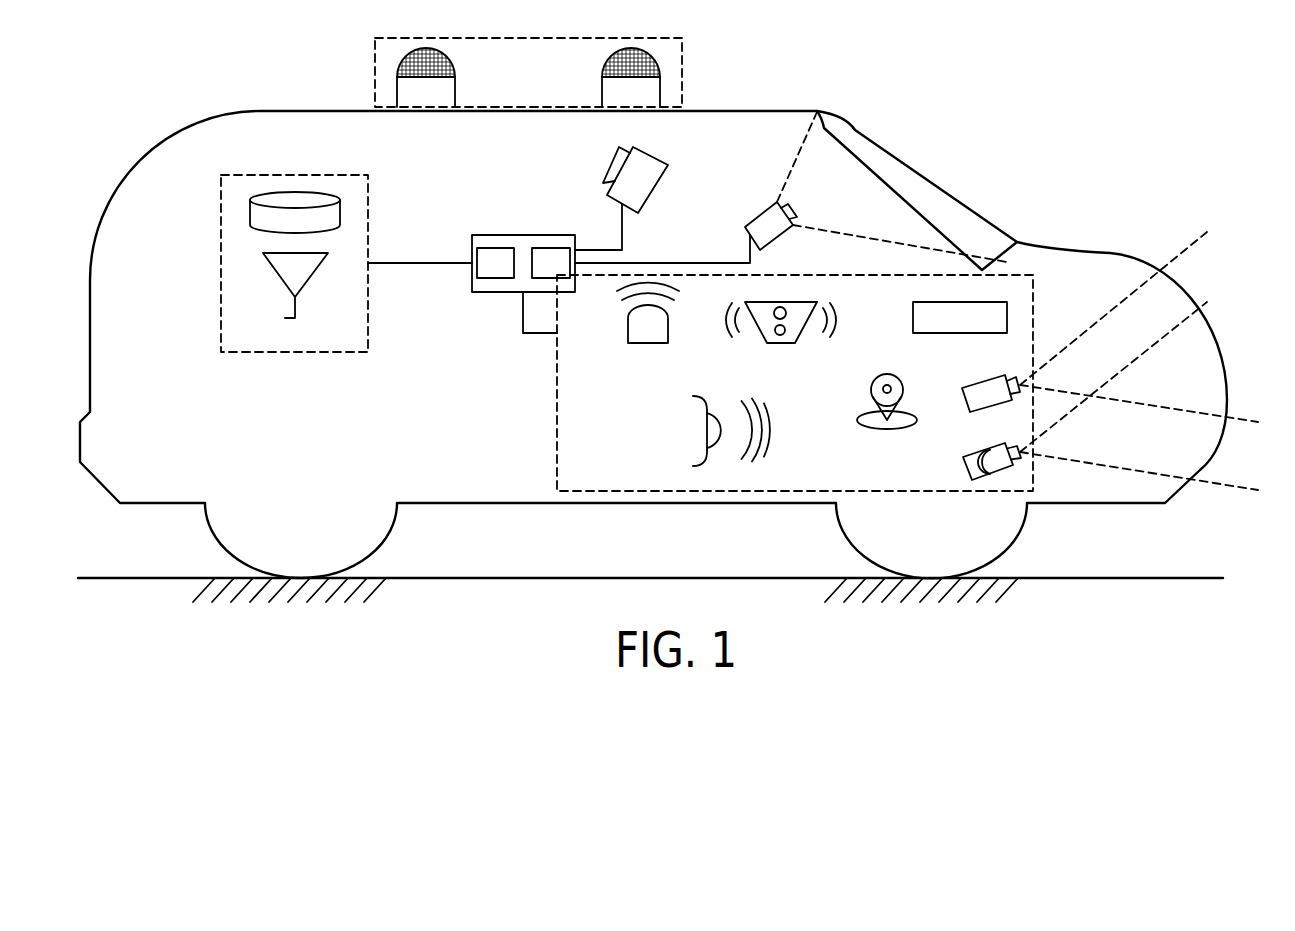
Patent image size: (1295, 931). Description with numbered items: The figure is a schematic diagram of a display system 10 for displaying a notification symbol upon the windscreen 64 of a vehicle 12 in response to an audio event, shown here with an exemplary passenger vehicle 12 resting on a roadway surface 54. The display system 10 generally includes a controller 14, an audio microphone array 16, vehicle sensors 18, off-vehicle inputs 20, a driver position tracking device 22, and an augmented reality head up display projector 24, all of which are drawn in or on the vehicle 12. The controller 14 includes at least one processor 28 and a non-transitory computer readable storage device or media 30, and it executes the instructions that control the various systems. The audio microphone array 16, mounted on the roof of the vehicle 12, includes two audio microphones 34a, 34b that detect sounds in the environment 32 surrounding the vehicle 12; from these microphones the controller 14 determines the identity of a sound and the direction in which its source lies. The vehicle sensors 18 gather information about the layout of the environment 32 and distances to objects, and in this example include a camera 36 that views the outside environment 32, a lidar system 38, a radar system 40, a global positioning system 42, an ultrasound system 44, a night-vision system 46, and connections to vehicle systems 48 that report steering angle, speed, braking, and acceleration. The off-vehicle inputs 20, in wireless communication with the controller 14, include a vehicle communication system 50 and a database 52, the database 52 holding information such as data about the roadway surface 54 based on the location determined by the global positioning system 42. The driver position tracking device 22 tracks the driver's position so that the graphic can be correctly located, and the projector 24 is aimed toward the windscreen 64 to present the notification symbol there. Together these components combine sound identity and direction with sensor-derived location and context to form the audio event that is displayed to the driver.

The display system 10 is at (653, 324).
The vehicle 12 is at (260, 110).
The controller 14 is at (519, 287).
The audio microphone array 16 is at (491, 72).
The vehicle sensors 18 is at (870, 361).
The off-vehicle inputs 20 is at (303, 263).
The driver position tracking device 22 is at (650, 152).
The augmented reality head up display (AR-HUD) projector 24 is at (777, 237).
The processor 28 is at (482, 276).
The non-transitory computer readable storage device or media 30 is at (538, 276).
The environment 32 is at (1105, 80).
The audio microphone 34a is at (407, 105).
The audio microphone 34b is at (612, 105).
The camera 36 is at (985, 384).
The lidar system 38 is at (797, 343).
The radar system 40 is at (707, 398).
The global positioning system (GPS) 42 is at (862, 422).
The ultrasound system 44 is at (648, 343).
The night-vision system 46 is at (963, 468).
The vehicle systems 48 is at (947, 329).
The vehicle communication system 50 is at (290, 318).
The database 52 is at (247, 208).
The roadway surface 54 is at (1162, 578).
The windscreen 64 is at (975, 226).